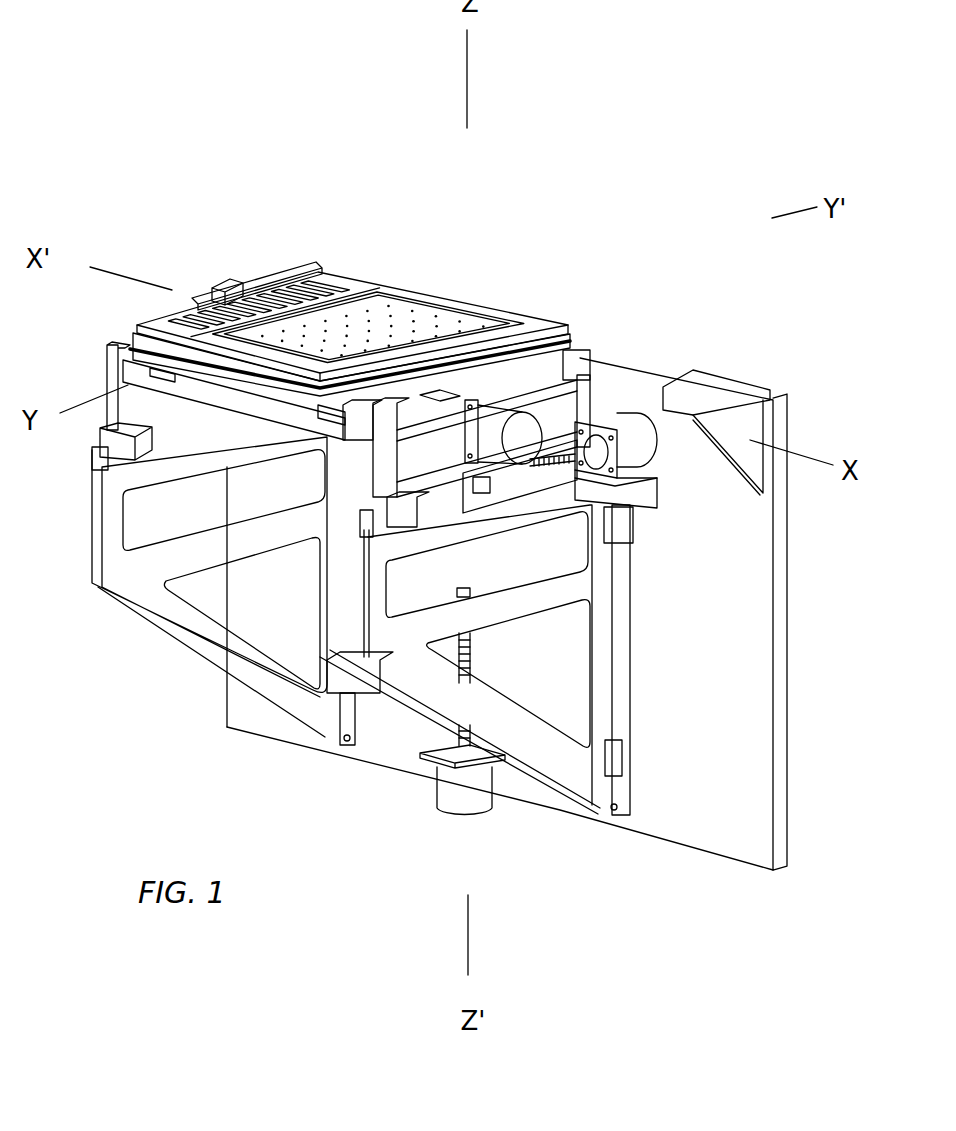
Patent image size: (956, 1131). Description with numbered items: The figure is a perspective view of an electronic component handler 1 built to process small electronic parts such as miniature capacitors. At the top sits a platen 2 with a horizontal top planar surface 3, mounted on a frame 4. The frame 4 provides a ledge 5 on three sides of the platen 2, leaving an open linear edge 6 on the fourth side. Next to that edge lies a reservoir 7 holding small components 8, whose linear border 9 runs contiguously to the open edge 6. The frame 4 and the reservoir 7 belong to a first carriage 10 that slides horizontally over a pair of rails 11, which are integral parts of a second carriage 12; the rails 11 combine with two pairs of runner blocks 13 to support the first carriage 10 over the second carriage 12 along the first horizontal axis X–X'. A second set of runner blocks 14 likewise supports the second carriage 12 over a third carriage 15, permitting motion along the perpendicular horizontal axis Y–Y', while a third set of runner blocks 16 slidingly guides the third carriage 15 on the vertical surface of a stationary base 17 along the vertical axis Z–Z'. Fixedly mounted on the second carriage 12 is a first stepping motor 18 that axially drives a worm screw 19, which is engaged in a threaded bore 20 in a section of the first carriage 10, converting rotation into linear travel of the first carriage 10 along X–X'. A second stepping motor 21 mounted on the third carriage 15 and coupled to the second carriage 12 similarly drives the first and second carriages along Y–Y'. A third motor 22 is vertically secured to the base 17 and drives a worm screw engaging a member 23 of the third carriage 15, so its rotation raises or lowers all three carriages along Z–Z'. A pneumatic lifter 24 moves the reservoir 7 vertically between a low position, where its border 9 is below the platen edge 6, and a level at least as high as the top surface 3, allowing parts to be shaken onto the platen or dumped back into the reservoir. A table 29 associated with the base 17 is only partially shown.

The electronic component handler 1 is at (594, 242).
The platen 2 is at (363, 335).
The top planar surface 3 is at (337, 335).
The frame 4 is at (492, 312).
The ledge 5 is at (400, 303).
The open linear edge 6 is at (327, 300).
The reservoir 7 is at (298, 290).
The small components 8 is at (258, 292).
The linear border 9 is at (305, 282).
The first carriage 10 is at (158, 361).
The rails 11 is at (560, 358).
The second carriage 12 is at (580, 373).
The runner blocks 13 is at (167, 371).
The runner blocks 14 is at (137, 450).
The third carriage 15 is at (600, 685).
The runner blocks 16 is at (627, 523).
The stationary base 17 is at (752, 425).
The first stepping motor 18 is at (523, 438).
The worm screw 19 is at (383, 403).
The threaded bore 20 is at (442, 383).
The second stepping motor 21 is at (637, 437).
The third motor 22 is at (463, 788).
The member 23 is at (345, 680).
The pneumatic lifter 24 is at (222, 283).
The table 29 is at (703, 388).